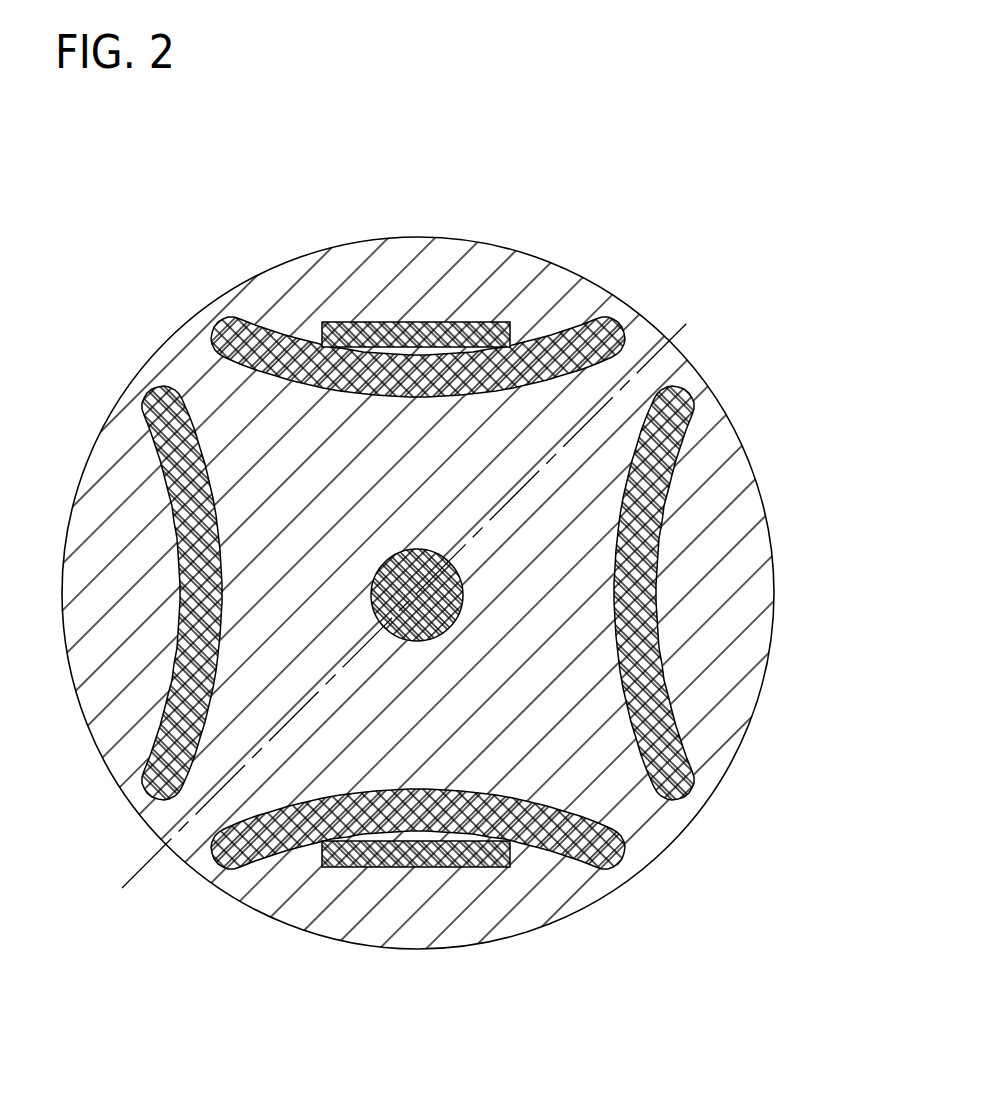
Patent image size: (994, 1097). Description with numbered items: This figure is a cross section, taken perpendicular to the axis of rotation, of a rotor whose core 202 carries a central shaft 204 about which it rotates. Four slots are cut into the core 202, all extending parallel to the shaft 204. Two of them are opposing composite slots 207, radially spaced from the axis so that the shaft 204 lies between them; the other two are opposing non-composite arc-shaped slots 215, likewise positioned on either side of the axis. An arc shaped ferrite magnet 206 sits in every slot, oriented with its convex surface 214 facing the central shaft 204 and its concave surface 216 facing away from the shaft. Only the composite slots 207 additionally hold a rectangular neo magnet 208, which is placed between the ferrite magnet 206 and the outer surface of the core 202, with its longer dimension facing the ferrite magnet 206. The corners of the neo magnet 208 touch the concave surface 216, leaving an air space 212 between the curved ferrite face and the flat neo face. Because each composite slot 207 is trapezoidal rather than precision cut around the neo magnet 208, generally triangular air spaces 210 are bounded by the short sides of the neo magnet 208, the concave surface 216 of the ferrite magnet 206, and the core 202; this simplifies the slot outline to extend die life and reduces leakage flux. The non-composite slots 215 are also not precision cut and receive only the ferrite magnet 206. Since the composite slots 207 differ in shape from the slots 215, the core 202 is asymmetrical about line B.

The core 202 is at (738, 570).
The central shaft 204 is at (435, 605).
The arc shaped ferrite magnet 206 is at (426, 486).
The trapezoidal composite slot 207 is at (417, 575).
The rectangular neo magnet 208 is at (487, 332).
The generally triangular air spaces 210 is at (520, 333).
The air space 212 is at (398, 356).
The convex surface 214 is at (200, 410).
The non-composite arc-shaped slot 215 is at (687, 376).
The concave surface 216 is at (150, 450).
The line B is at (138, 873).